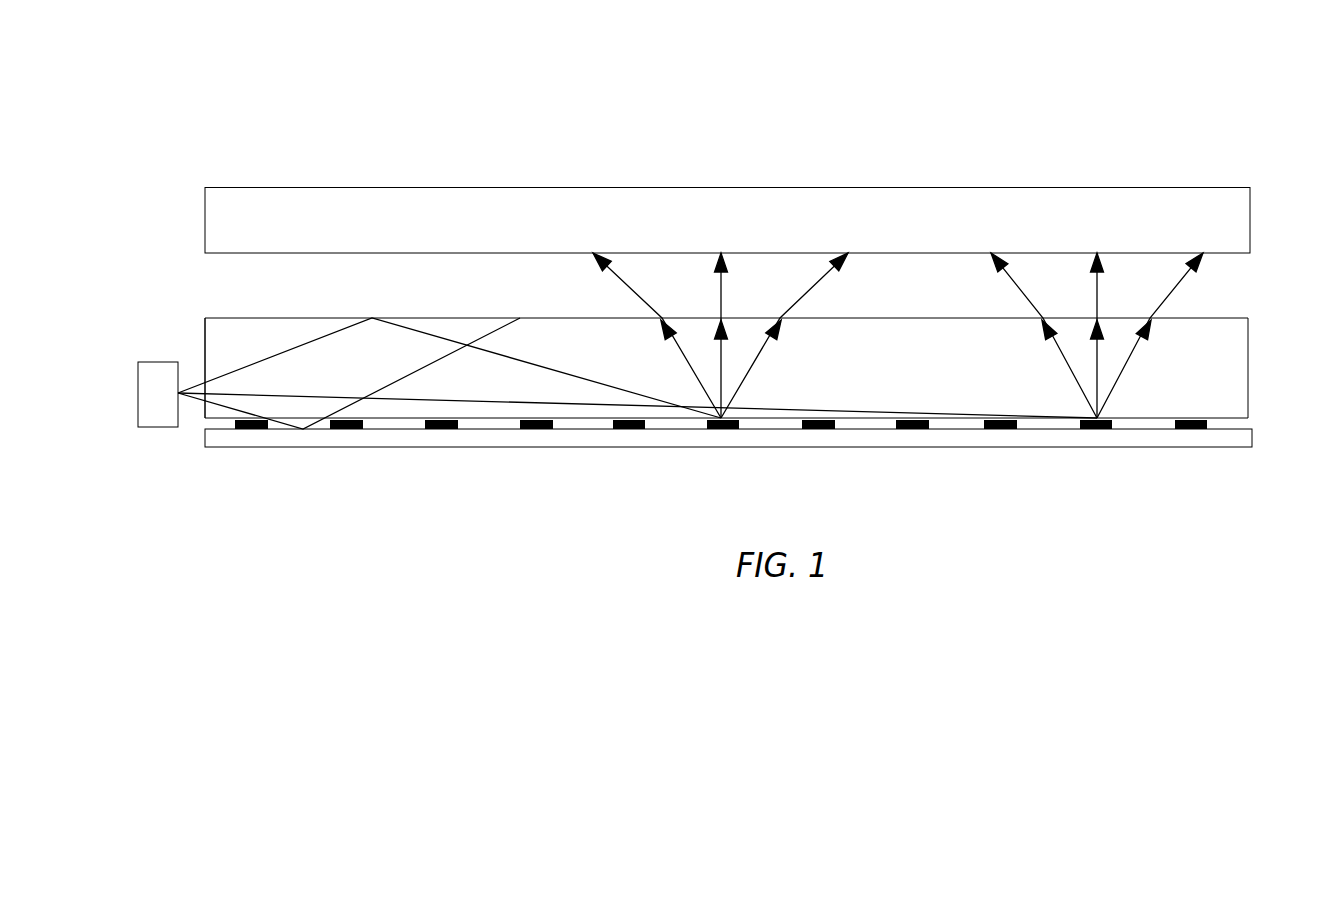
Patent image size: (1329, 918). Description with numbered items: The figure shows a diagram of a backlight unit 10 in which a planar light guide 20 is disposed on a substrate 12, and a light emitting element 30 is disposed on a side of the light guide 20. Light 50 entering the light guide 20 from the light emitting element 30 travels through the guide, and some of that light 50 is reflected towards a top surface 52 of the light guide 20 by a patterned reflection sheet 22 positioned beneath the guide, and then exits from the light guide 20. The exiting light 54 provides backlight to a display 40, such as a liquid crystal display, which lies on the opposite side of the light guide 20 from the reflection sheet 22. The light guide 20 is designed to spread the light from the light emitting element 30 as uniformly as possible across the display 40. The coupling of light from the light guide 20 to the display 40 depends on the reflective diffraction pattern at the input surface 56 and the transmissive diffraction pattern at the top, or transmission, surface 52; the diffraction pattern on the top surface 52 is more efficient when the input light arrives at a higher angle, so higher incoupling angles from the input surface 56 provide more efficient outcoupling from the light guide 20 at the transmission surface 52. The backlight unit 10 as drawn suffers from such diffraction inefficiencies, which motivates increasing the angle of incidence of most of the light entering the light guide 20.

The backlight unit 10 is at (212, 105).
The substrate 12 is at (972, 447).
The planar light guide 20 is at (753, 336).
The patterned reflection sheet 22 is at (442, 428).
The light emitting element 30 is at (153, 368).
The display 40 is at (1104, 200).
The light 50 is at (362, 318).
The top surface 52 is at (950, 318).
The exiting light 54 is at (646, 301).
The input surface 56 is at (203, 367).